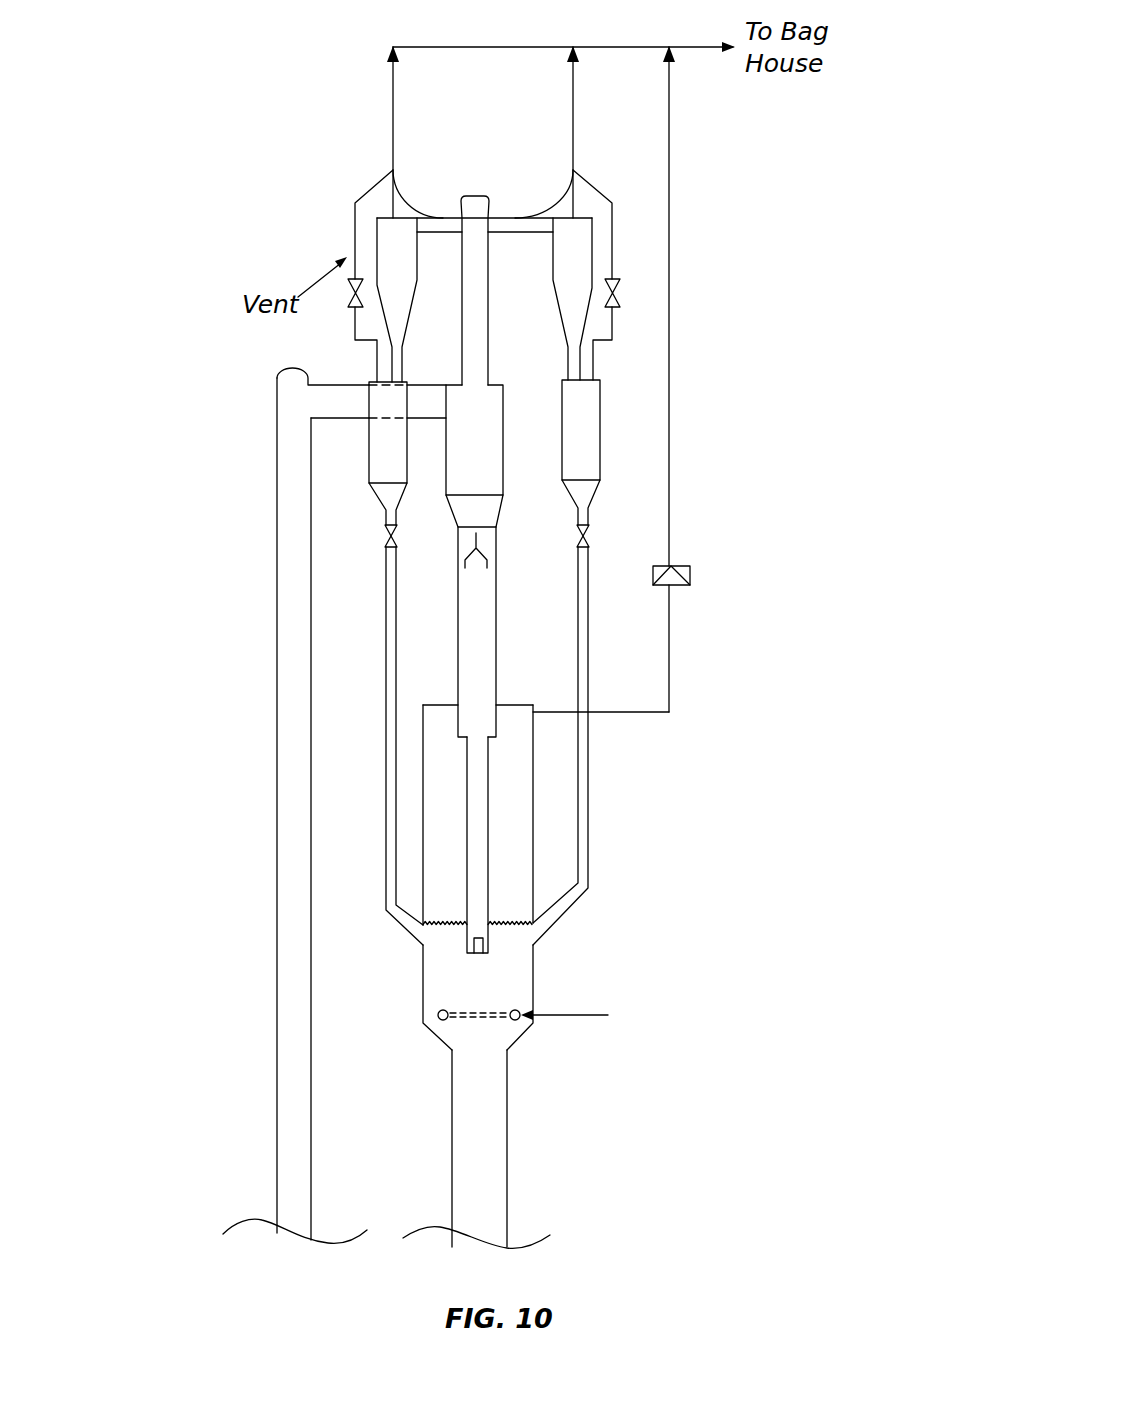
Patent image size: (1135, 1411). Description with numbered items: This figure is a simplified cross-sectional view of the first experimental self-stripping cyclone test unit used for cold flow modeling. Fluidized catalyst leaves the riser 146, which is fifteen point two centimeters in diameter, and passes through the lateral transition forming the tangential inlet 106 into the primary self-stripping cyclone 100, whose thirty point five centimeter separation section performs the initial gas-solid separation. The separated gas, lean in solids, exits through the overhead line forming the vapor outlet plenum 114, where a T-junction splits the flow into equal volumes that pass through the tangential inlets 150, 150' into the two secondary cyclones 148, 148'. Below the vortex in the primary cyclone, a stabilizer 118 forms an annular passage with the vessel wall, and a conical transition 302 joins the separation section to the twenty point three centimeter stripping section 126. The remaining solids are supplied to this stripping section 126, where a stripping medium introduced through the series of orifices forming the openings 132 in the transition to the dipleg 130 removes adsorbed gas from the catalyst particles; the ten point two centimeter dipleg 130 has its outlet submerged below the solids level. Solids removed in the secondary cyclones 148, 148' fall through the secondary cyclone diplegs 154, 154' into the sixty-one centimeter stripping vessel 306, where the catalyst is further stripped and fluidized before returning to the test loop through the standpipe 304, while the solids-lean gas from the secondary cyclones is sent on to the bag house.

The self-stripping cyclone 100 is at (490, 468).
The tangential inlet 106 is at (333, 383).
The vapor outlet plenum 114 is at (478, 342).
The stabilizer 118 is at (487, 541).
The stripping section 126 is at (495, 637).
The dipleg 130 is at (467, 822).
The openings 132 is at (496, 737).
The riser 146 is at (277, 1065).
The secondary cyclone 148 is at (608, 299).
The secondary cyclone 148' is at (360, 300).
The tangential inlet 150 is at (571, 132).
The tangential inlet 150' is at (384, 132).
The secondary cyclone dipleg 154 is at (600, 746).
The secondary cyclone dipleg 154' is at (369, 746).
The conical transition 302 is at (463, 512).
The standpipe 304 is at (508, 1172).
The stripping vessel 306 is at (528, 972).